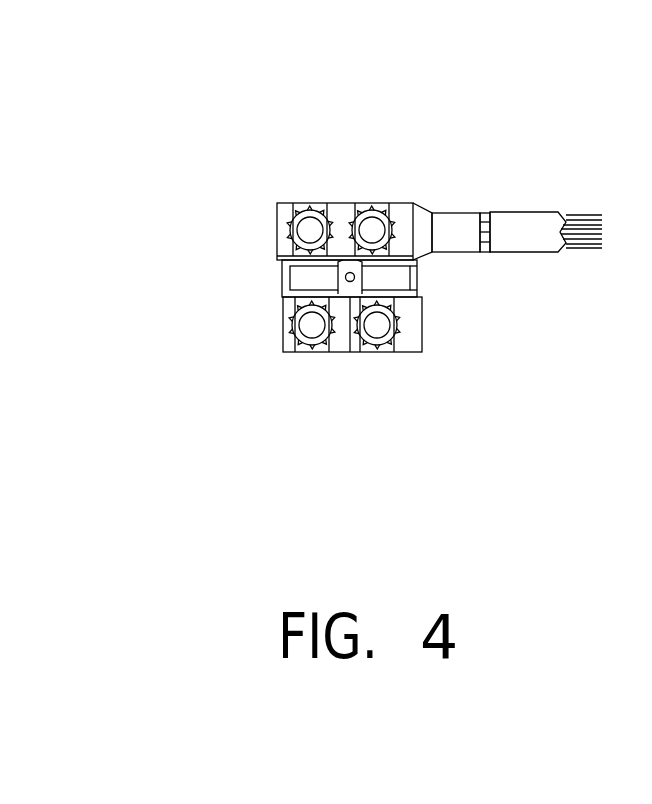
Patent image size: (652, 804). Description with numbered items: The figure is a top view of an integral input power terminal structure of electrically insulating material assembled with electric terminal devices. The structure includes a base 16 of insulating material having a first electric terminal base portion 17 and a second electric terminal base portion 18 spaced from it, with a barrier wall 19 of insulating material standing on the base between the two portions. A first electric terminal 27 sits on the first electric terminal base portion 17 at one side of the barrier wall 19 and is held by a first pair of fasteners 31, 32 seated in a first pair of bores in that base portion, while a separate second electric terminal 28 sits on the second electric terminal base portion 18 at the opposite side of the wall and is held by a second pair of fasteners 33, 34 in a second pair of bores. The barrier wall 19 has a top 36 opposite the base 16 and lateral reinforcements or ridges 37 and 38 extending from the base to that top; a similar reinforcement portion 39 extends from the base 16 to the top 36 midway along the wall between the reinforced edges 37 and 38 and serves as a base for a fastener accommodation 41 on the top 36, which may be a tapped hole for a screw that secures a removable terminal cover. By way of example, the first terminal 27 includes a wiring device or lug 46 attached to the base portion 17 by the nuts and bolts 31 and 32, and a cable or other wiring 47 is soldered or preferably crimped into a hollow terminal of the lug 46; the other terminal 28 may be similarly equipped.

The base 16 is at (275, 253).
The first electric terminal base portion 17 is at (418, 267).
The second electric terminal base portion 18 is at (422, 327).
The barrier wall 19 is at (281, 285).
The first electric terminal 27 is at (330, 203).
The second electric terminal 28 is at (340, 352).
The first fastener 31 is at (372, 232).
The first fastener 32 is at (310, 230).
The second fastener 33 is at (376, 325).
The second fastener 34 is at (310, 323).
The top of barrier wall 36 is at (317, 277).
The lateral reinforcement 37 is at (420, 280).
The lateral reinforcement 38 is at (318, 275).
The reinforcement portion 39 is at (349, 272).
The fastener accommodation 41 is at (350, 352).
The lug 46 is at (445, 225).
The cable 47 is at (527, 228).